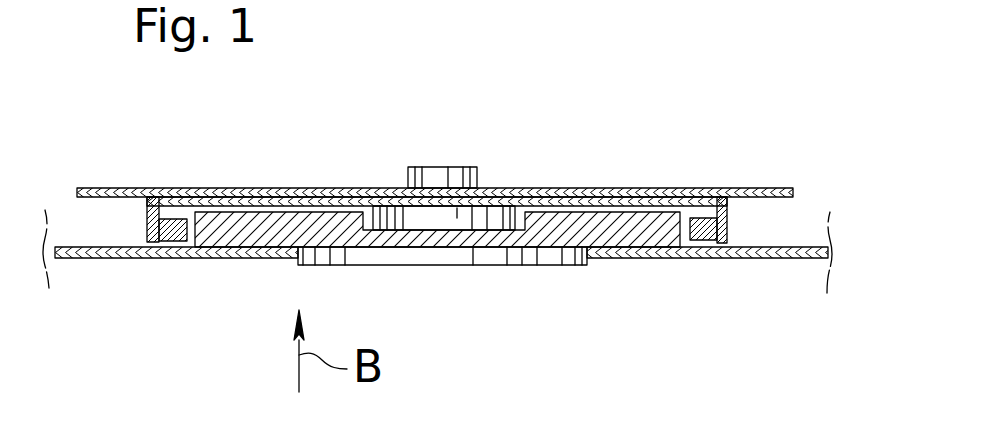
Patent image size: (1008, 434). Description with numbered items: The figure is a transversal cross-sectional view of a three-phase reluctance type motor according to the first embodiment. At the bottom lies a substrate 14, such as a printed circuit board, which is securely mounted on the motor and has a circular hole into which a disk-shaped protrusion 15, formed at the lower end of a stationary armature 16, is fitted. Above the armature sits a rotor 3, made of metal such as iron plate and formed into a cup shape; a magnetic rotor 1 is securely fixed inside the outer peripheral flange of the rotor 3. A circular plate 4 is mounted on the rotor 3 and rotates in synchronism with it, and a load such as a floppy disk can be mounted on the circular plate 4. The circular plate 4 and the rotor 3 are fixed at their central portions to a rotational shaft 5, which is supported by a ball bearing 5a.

The magnetic rotor 1 is at (708, 238).
The rotor 3 is at (728, 208).
The circular plate 4 is at (749, 188).
The rotational shaft 5 is at (458, 166).
The ball bearing 5a is at (393, 205).
The substrate 14 is at (122, 253).
The disk-shaped protrusion 15 is at (430, 265).
The stationary armature 16 is at (607, 232).